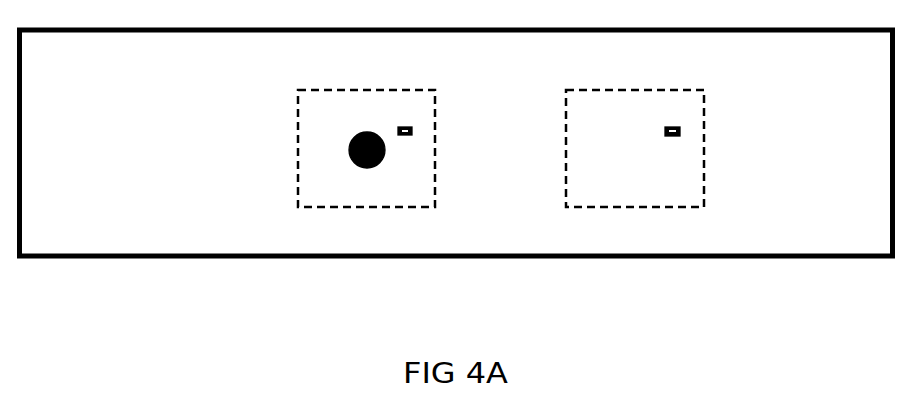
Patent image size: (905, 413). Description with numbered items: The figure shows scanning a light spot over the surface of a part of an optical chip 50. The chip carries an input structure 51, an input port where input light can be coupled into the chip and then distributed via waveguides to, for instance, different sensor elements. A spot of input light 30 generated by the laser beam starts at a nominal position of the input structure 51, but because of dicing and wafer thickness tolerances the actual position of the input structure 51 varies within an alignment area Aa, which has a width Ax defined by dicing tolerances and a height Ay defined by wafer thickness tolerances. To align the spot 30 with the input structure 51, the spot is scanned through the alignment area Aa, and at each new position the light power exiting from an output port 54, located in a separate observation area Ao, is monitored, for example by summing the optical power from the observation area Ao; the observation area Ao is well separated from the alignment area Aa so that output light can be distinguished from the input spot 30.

The optical chip 50 is at (877, 62).
The input light spot 30 is at (350, 150).
The input structure 51 is at (413, 146).
The output port 54 is at (682, 147).
The alignment area Aa is at (297, 207).
The observation area Ao is at (565, 207).
The width of alignment area Ax is at (435, 73).
The height of alignment area Ay is at (455, 88).